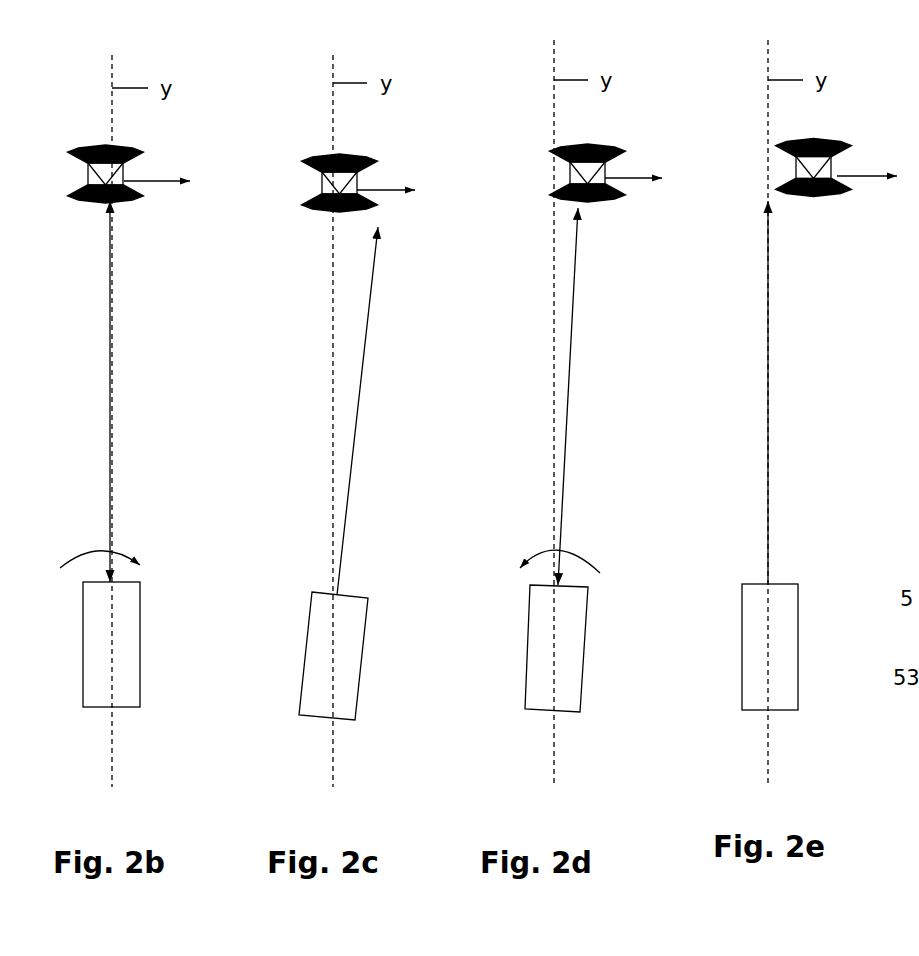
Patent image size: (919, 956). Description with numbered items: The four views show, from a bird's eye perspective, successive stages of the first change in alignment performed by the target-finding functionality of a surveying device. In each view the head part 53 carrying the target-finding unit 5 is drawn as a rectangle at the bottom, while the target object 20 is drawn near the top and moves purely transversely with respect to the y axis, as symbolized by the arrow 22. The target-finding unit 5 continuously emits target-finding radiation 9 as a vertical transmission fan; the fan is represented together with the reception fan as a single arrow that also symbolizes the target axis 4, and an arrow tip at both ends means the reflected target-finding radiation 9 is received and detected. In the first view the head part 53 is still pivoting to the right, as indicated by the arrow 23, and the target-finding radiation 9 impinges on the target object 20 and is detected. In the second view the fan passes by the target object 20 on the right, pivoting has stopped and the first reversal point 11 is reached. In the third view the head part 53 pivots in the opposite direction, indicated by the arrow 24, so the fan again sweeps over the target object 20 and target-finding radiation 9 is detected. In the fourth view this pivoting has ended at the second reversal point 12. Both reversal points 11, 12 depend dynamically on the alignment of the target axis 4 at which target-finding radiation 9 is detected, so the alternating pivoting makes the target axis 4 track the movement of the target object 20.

In FIG. 2B, the target axis 4 is at (164, 391).
In FIG. 2C, the target axis 4 is at (390, 411).
In FIG. 2D, the target axis 4 is at (616, 396).
In FIG. 2E, the target axis 4 is at (820, 392).
In FIG. 2C, the target-finding radiation 9 is at (357, 411).
In FIG. 2D, the target-finding radiation 9 is at (568, 396).
In FIG. 2C, the target-finding unit 5 is at (270, 621).
In FIG. 2D, the target-finding unit 5 is at (497, 612).
In FIG. 2E, the target-finding unit 5 is at (705, 616).
In FIG. 2C, the first reversal point 11 is at (288, 540).
In FIG. 2E, the second reversal point 12 is at (718, 531).
In FIG. 2B, the target object 20 is at (131, 171).
In FIG. 2C, the target object 20 is at (374, 179).
In FIG. 2D, the target object 20 is at (613, 169).
In FIG. 2E, the target object 20 is at (840, 164).
In FIG. 2B, the arrow 22 is at (168, 209).
In FIG. 2C, the arrow 22 is at (402, 218).
In FIG. 2D, the arrow 22 is at (648, 204).
In FIG. 2E, the arrow 22 is at (878, 204).
In FIG. 2B, the arrow 23 is at (125, 537).
In FIG. 2D, the arrow 24 is at (582, 537).
In FIG. 2B, the head part 53 is at (78, 644).
In FIG. 2C, the head part 53 is at (290, 656).
In FIG. 2D, the head part 53 is at (521, 648).
In FIG. 2E, the head part 53 is at (729, 647).